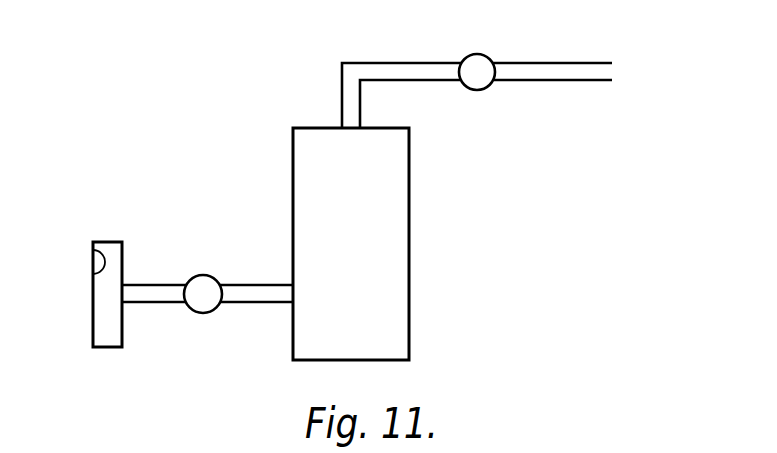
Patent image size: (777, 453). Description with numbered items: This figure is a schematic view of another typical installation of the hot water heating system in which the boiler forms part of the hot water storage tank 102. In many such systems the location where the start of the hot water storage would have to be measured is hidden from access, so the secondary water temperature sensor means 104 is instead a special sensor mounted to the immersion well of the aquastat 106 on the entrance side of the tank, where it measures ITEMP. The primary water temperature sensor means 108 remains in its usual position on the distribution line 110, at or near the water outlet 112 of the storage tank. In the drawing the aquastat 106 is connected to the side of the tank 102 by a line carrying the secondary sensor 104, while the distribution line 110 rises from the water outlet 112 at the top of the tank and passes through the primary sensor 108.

The hot water storage tank 102 is at (310, 165).
The secondary water temperature sensor means 104 is at (198, 303).
The aquastat 106 is at (103, 312).
The primary water temperature sensor means 108 is at (477, 77).
The distribution line 110 is at (347, 75).
The water outlet 112 is at (353, 128).